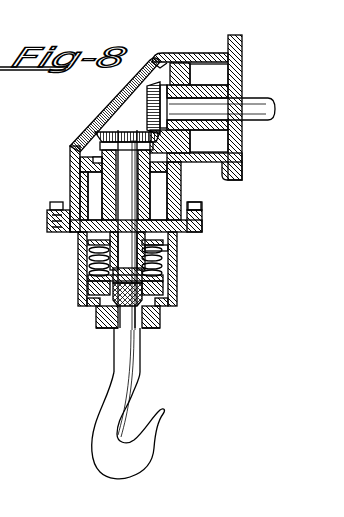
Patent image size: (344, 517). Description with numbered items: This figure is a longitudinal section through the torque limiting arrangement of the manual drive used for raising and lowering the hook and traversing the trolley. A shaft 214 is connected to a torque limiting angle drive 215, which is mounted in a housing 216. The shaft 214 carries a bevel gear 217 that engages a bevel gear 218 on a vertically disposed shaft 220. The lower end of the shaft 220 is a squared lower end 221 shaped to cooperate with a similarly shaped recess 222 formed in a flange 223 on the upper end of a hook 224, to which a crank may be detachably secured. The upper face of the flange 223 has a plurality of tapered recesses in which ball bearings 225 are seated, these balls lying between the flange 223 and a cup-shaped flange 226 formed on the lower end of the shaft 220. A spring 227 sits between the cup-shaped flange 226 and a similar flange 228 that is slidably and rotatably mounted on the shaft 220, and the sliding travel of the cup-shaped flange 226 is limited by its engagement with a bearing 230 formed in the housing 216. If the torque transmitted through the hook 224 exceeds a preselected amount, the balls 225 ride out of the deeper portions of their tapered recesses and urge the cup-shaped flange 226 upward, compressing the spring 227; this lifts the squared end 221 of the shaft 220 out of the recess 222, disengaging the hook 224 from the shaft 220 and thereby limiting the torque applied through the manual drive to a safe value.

The shaft 214 is at (254, 104).
The torque limiting angle drive 215 is at (38, 173).
The housing 216 is at (125, 97).
The bevel gear 217 is at (151, 63).
The bevel gear 218 is at (138, 126).
The vertically disposed shaft 220 is at (123, 190).
The squared lower end 221 is at (83, 319).
The recess 222 is at (106, 330).
The flange 223 is at (160, 291).
The hook 224 is at (140, 369).
The ball bearings 225 is at (174, 319).
The cup-shaped flange 226 is at (63, 281).
The spring 227 is at (163, 264).
The flange 228 is at (176, 241).
The bearing 230 is at (186, 202).